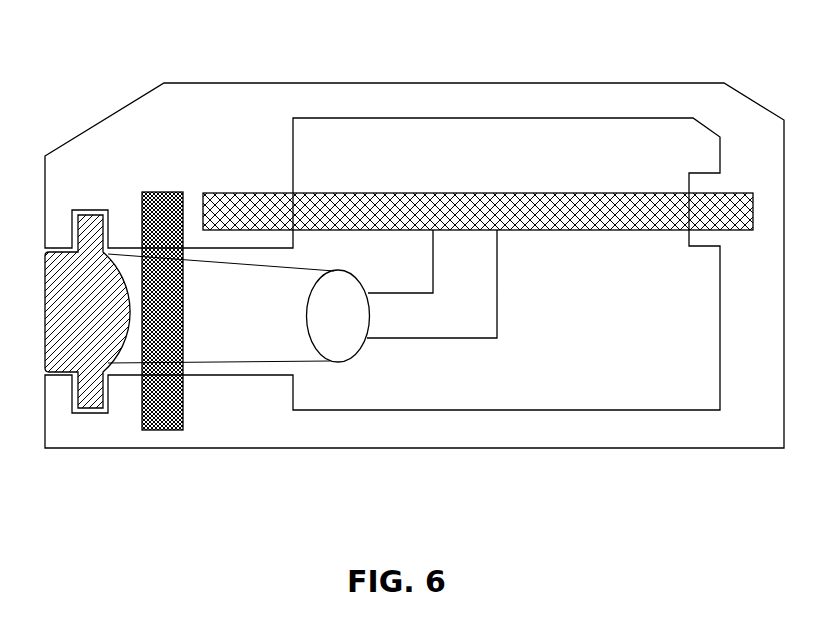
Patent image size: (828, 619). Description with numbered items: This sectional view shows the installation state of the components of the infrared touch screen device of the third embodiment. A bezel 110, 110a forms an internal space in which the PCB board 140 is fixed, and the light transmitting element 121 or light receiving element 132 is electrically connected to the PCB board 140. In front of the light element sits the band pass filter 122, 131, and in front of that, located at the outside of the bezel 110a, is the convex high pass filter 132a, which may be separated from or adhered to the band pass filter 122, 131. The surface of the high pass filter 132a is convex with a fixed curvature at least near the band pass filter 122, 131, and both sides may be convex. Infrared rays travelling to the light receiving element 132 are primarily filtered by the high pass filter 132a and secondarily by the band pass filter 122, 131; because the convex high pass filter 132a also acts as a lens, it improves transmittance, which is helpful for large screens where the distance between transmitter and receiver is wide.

The housing 110 is at (414, 234).
The bezel 110a is at (177, 108).
The PCB board 140 is at (380, 200).
The light transmitting element 121 is at (312, 350).
The band pass filter 122 is at (337, 320).
The band pass filter 131 is at (149, 430).
The light receiving element 132 is at (143, 356).
The lens 132a is at (72, 408).